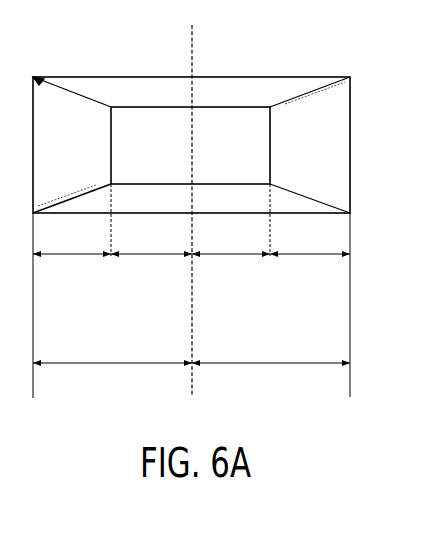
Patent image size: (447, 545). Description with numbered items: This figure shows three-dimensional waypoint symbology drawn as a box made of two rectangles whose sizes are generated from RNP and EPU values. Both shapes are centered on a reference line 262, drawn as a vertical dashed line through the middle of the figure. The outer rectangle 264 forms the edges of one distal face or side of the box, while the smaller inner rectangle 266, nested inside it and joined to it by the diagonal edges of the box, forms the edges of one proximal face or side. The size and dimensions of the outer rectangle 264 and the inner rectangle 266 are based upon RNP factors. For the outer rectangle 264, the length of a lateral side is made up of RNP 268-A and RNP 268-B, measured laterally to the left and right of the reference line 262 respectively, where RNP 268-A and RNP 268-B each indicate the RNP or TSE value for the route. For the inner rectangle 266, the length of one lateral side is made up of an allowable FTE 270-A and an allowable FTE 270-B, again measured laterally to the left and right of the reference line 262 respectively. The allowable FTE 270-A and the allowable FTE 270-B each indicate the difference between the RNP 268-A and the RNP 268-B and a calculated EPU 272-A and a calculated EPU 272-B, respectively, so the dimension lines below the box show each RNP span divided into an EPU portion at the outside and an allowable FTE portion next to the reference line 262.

The reference line 262 is at (193, 42).
The outer rectangle 264 is at (70, 77).
The inner rectangle 266 is at (123, 107).
The RNP 268-A is at (106, 367).
The RNP 268-B is at (272, 367).
The allowable FTE 270-A is at (150, 258).
The allowable FTE 270-B is at (237, 258).
The calculated EPU 272-A is at (73, 258).
The calculated EPU 272-B is at (308, 258).